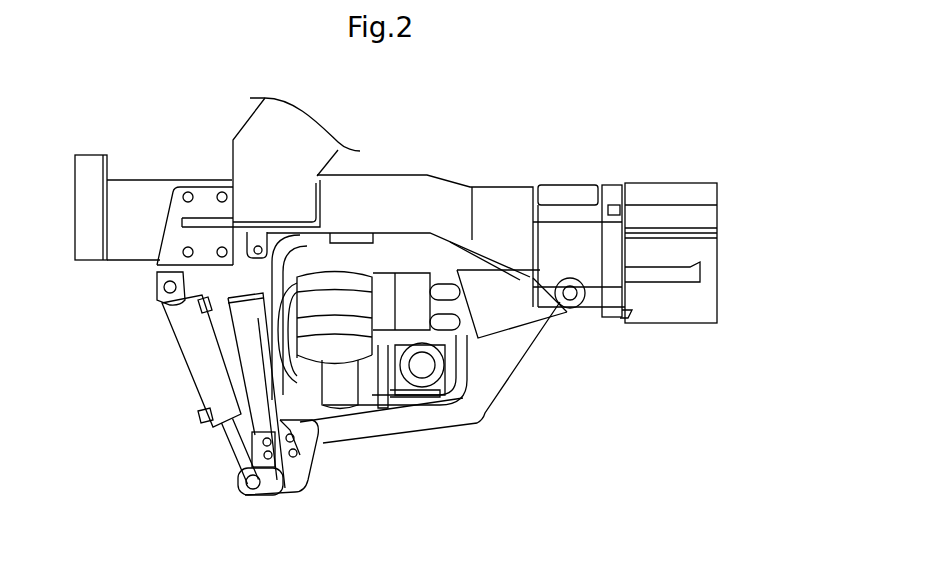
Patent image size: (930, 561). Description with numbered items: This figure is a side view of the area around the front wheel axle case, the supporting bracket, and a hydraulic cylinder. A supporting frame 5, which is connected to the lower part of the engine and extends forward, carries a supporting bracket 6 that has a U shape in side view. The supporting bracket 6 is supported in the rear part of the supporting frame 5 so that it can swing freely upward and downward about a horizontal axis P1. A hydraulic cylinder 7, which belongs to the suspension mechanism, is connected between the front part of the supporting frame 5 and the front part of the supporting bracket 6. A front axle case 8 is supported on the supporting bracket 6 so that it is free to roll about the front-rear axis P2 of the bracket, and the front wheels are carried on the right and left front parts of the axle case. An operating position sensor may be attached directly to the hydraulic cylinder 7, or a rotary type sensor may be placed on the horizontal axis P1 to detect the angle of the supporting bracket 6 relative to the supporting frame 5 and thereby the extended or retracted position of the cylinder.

The supporting frame 5 is at (447, 192).
The supporting bracket 6 is at (478, 408).
The hydraulic cylinder 7 is at (192, 353).
The front axle case 8 is at (345, 277).
The horizontal axis P1 is at (575, 307).
The front-rear axis P2 is at (388, 308).